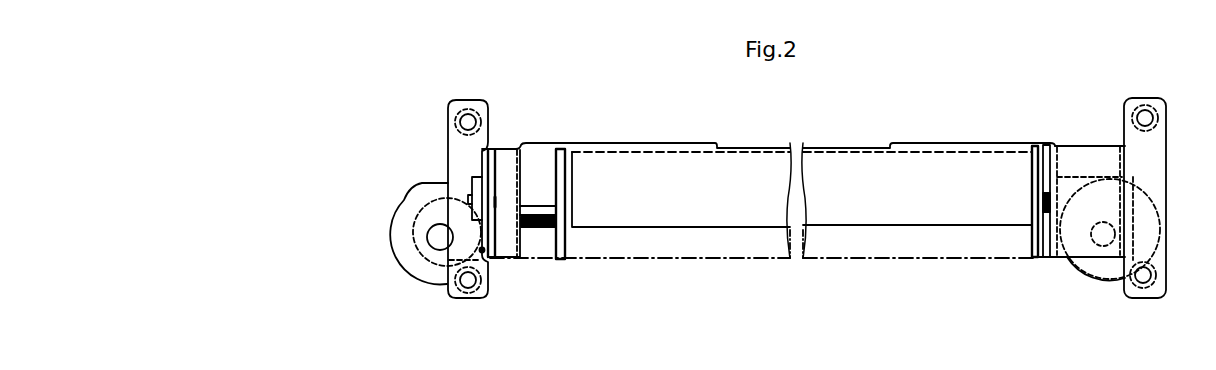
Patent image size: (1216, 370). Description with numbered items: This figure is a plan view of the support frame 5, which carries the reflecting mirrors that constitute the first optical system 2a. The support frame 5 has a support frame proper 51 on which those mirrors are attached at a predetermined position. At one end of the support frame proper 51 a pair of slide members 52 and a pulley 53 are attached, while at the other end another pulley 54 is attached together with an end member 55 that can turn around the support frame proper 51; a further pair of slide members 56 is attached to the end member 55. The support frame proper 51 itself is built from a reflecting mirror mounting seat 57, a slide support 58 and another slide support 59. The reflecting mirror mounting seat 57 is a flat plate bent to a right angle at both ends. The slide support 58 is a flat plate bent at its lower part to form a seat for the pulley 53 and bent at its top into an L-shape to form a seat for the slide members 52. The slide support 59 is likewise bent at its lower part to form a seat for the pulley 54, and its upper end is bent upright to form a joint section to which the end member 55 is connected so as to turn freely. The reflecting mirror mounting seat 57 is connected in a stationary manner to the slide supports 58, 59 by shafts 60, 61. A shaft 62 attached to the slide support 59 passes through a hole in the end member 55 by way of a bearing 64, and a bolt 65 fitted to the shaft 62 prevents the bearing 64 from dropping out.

The 1st optical system 2a is at (841, 142).
The support frame 5 is at (684, 268).
The support frame proper 51 is at (755, 147).
The slide members 52 is at (1150, 116).
The pulley 53 is at (1090, 268).
The pulley 54 is at (412, 257).
The end member 55 is at (486, 96).
The slide members 56 is at (467, 114).
The reflecting mirror mounting seat 57 is at (565, 183).
The slide support 58 is at (1082, 160).
The slide support 59 is at (497, 232).
The shaft 60 is at (1046, 197).
The shaft 61 is at (540, 230).
The shaft 62 is at (498, 196).
The bearing 64 is at (471, 177).
The bolt 65 is at (469, 190).